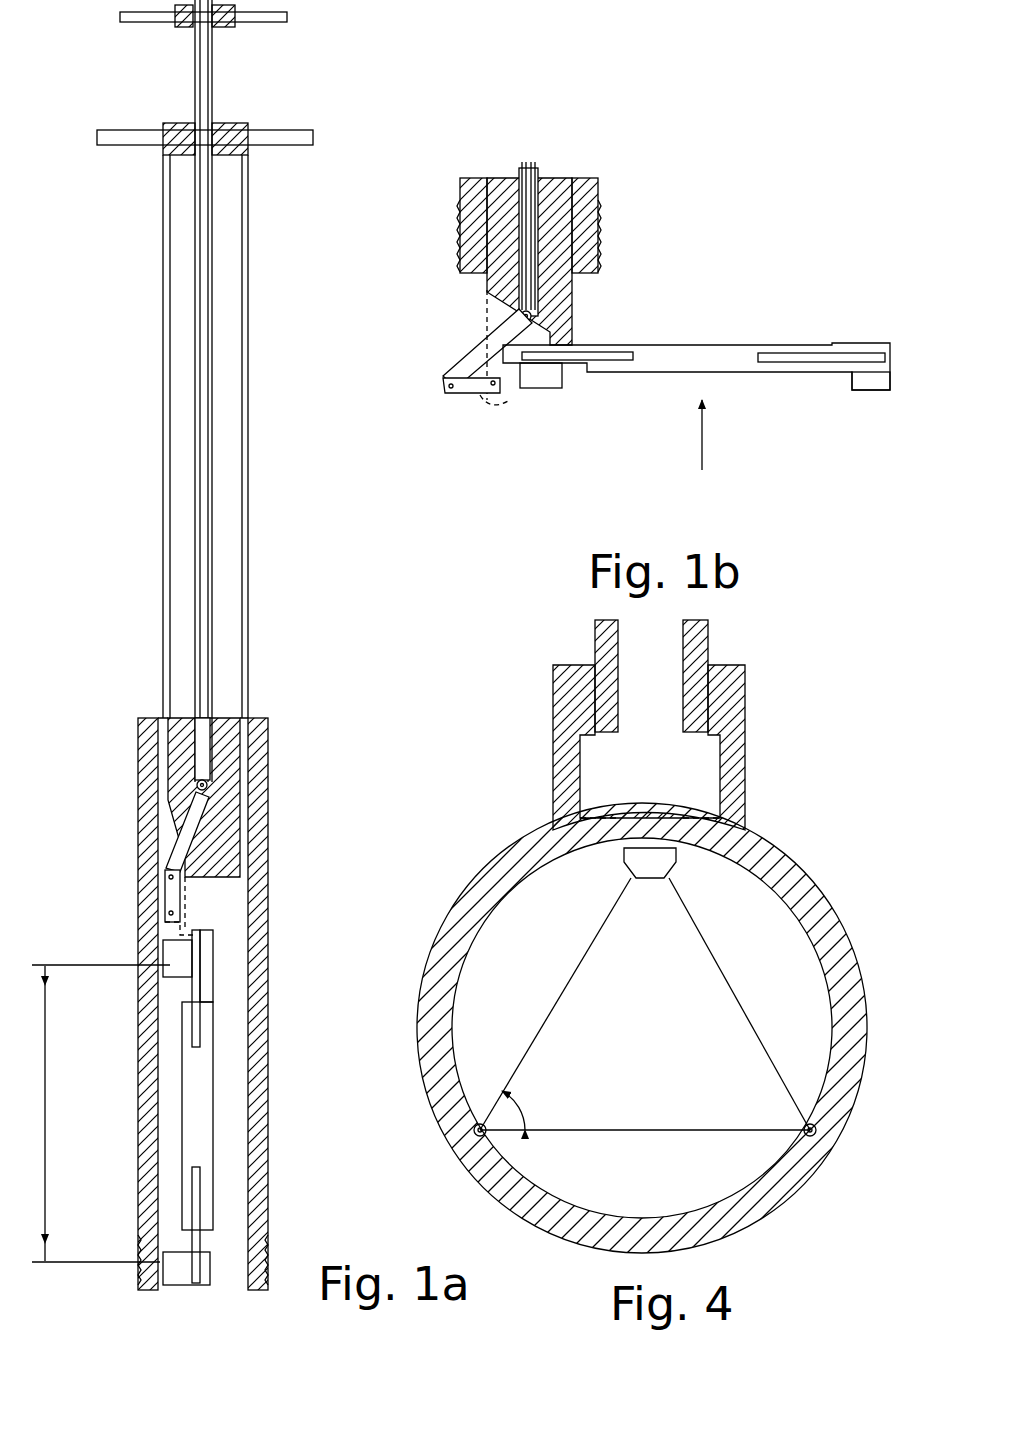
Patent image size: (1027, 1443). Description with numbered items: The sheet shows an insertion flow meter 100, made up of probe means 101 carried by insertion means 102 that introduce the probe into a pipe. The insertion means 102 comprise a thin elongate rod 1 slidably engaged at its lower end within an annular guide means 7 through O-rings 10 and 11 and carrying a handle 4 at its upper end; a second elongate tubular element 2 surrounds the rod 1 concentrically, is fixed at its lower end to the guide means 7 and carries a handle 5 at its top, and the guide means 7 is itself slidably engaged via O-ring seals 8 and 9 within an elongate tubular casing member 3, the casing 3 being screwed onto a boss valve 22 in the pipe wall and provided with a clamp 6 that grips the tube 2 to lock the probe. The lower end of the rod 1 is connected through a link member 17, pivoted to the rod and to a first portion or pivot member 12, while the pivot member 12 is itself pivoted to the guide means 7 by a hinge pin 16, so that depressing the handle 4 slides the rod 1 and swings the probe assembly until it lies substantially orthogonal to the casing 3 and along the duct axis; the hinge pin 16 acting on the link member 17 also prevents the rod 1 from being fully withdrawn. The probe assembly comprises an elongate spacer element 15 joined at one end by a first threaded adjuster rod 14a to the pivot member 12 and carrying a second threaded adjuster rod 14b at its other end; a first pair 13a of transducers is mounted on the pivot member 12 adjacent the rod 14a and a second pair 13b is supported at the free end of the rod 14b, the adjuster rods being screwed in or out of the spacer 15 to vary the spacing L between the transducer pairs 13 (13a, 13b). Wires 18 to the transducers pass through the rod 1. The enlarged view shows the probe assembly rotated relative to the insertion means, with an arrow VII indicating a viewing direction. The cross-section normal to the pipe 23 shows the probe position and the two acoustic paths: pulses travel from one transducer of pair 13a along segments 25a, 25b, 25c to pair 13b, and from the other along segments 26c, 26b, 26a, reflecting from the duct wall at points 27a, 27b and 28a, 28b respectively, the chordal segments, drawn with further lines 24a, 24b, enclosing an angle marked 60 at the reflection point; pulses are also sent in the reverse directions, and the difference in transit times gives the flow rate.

In FIG. 1A, the elongate rod 1 is at (205, 48).
In FIG. 1B, the elongate rod 1 is at (518, 165).
In FIG. 1A, the tubular element 2 is at (250, 350).
In FIG. 1A, the tubular casing member 3 is at (258, 805).
In FIG. 1B, the tubular casing member 3 is at (585, 188).
In FIG. 4, the tubular casing member 3 is at (708, 630).
In FIG. 1A, the handle 4 is at (270, 20).
In FIG. 1A, the handle 5 is at (285, 147).
In FIG. 1A, the clamp 6 is at (262, 718).
In FIG. 1A, the guide means 7 is at (232, 718).
In FIG. 1B, the guide means 7 is at (560, 178).
In FIG. 4, the guide means 7 is at (680, 835).
In FIG. 1A, the O-ring seal 8 is at (268, 738).
In FIG. 1A, the O-ring seal 9 is at (268, 825).
In FIG. 1A, the O-ring 10 is at (185, 145).
In FIG. 1A, the O-ring 11 is at (160, 722).
In FIG. 1A, the pivot member 12 is at (168, 888).
In FIG. 1B, the pivot member 12 is at (470, 395).
In FIG. 4, the transducer pairs 13 is at (630, 860).
In FIG. 1A, the first pair of transducers 13a is at (175, 985).
In FIG. 1B, the first pair of transducers 13a is at (545, 382).
In FIG. 1A, the second pair of transducers 13b is at (160, 1262).
In FIG. 1B, the second pair of transducers 13b is at (862, 385).
In FIG. 1A, the first threaded adjuster rod 14a is at (198, 995).
In FIG. 1B, the first threaded adjuster rod 14a is at (612, 355).
In FIG. 1A, the second threaded adjuster rod 14b is at (198, 1222).
In FIG. 1B, the second threaded adjuster rod 14b is at (790, 356).
In FIG. 1A, the spacer element 15 is at (200, 1085).
In FIG. 1B, the spacer element 15 is at (710, 352).
In FIG. 1A, the hinge pin 16 is at (172, 918).
In FIG. 1B, the hinge pin 16 is at (495, 395).
In FIG. 1A, the link member 17 is at (170, 820).
In FIG. 1B, the link member 17 is at (480, 345).
In FIG. 1A, the wires 18 is at (215, 980).
In FIG. 4, the boss valve 22 is at (745, 728).
In FIG. 4, the ring body 23 is at (800, 880).
In FIG. 4, the first strut 24a is at (575, 965).
In FIG. 4, the second strut 24b is at (535, 1035).
In FIG. 4, the acoustic path segment 25a is at (555, 1020).
In FIG. 4, the acoustic path segment 25b is at (648, 1130).
In FIG. 4, the acoustic path segment 25c is at (725, 980).
In FIG. 4, the acoustic path segment 26a is at (555, 1030).
In FIG. 4, the acoustic path segment 26b is at (650, 1130).
In FIG. 4, the acoustic path segment 26c is at (725, 982).
In FIG. 4, the reflection point 27a is at (472, 1132).
In FIG. 4, the reflection point 27b is at (818, 1134).
In FIG. 4, the reflection point 28a is at (476, 1136).
In FIG. 4, the reflection point 28b is at (814, 1138).
In FIG. 1A, the insertion flow meter 100 is at (255, 318).
In FIG. 1A, the probe means 101 is at (222, 960).
In FIG. 1A, the insertion means 102 is at (215, 610).
In FIG. 1A, the transducer spacing L is at (94, 1113).
In FIG. 1B, the section view direction VII is at (724, 508).
In FIG. 4, the angle 60 degrees 60 is at (505, 1118).